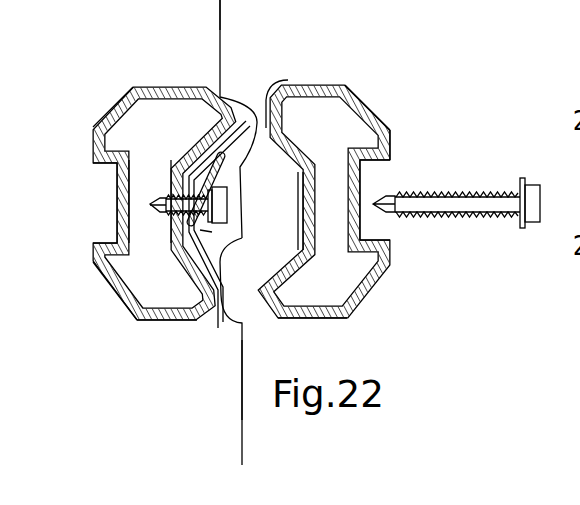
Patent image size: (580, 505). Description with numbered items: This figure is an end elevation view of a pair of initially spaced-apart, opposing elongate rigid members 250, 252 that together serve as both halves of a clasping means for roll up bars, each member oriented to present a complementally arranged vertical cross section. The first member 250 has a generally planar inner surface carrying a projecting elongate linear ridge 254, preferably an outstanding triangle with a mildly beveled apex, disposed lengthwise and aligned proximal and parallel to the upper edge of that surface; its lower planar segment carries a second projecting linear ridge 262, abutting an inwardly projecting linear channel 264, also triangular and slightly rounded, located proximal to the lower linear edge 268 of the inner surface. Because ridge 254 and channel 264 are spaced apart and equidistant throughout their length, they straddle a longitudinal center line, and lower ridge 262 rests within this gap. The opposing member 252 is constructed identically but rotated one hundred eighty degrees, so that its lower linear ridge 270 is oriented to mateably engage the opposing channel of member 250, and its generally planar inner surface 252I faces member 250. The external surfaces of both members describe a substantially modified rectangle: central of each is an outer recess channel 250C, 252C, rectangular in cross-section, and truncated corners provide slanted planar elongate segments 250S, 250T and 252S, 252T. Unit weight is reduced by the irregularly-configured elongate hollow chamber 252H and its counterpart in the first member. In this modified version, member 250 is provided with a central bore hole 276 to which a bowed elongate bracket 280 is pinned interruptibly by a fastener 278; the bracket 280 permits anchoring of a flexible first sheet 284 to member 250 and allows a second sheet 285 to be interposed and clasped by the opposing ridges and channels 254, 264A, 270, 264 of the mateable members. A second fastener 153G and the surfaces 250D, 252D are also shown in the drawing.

The elongate rigid member 250 is at (166, 83).
The slanted planar segment 250S is at (122, 98).
The outer recess channel 250C is at (120, 226).
The bottom wall of first body 250D is at (97, 275).
The slanted planar segment 250T is at (134, 322).
The opposing elongate rigid member 252 is at (398, 273).
The slanted planar segment 252S is at (380, 118).
The wall of second body 252D is at (390, 148).
The outer recess channel 252C is at (363, 182).
The slanted planar segment 252T is at (373, 300).
The hollow chamber 252H is at (190, 147).
The inner surface 252I is at (297, 183).
The projecting elongate linear ridge 254 is at (239, 97).
The second projecting linear ridge 262 is at (196, 254).
The inwardly projecting linear channel 264 is at (196, 317).
The channel 264A is at (268, 105).
The lower linear edge 268 is at (518, 12).
The lower linear ridge 270 is at (255, 293).
The central bore hole 276 is at (165, 170).
The fastener 278 is at (228, 212).
The bowed elongate bracket 280 is at (213, 238).
The flexible first sheet 284 is at (220, 17).
The second sheet 285 is at (242, 377).
The screw 153G is at (450, 217).